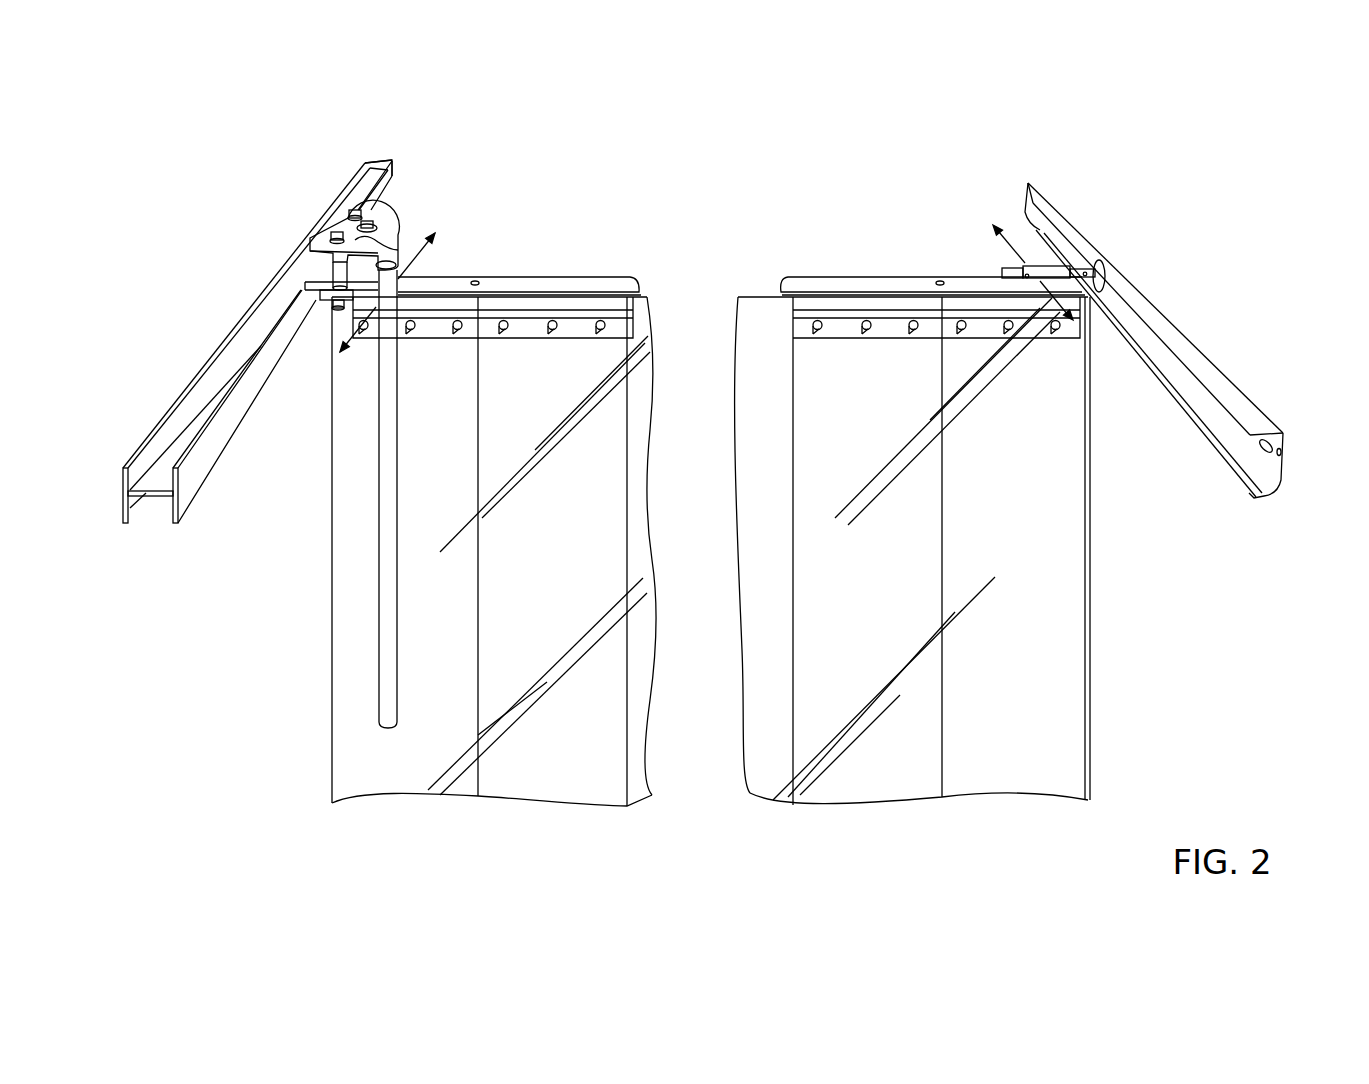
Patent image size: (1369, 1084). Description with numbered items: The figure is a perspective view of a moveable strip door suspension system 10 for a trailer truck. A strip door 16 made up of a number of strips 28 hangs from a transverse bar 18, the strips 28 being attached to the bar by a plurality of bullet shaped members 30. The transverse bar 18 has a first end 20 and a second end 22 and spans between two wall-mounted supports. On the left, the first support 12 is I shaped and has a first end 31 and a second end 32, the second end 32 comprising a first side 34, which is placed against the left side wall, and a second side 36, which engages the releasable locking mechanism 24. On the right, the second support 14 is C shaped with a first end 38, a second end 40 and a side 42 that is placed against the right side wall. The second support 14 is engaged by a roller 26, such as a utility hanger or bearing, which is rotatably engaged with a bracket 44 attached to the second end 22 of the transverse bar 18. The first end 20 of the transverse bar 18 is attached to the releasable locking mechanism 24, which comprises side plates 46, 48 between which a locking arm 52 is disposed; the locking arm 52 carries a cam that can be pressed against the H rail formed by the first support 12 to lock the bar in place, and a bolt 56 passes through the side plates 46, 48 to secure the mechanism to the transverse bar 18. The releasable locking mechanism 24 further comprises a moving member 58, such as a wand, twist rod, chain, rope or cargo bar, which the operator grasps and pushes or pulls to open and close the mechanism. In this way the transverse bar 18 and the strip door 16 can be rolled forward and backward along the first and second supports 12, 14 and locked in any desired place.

The moveable strip door suspension system 10 is at (735, 196).
The first support 12 is at (266, 338).
The second support 14 is at (1175, 318).
The strip door 16 is at (331, 676).
The transverse bar 18 is at (719, 283).
The first end 20 is at (432, 277).
The second end 22 is at (968, 277).
The releasable locking mechanism 24 is at (351, 265).
The roller 26 is at (1108, 270).
The strips 28 is at (652, 756).
The bullet shaped members 30 is at (597, 338).
The first end 31 is at (149, 506).
The second end 32 is at (365, 162).
The first side 34 is at (142, 447).
The second side 36 is at (202, 472).
The first end 38 is at (1291, 452).
The second end 40 is at (1034, 182).
The side 42 is at (1287, 433).
The bracket 44 is at (1050, 262).
The side plate 46 is at (332, 211).
The side plate 48 is at (326, 300).
The locking arm 52 is at (396, 248).
The bolt 56 is at (392, 196).
The moving member 58 is at (397, 466).